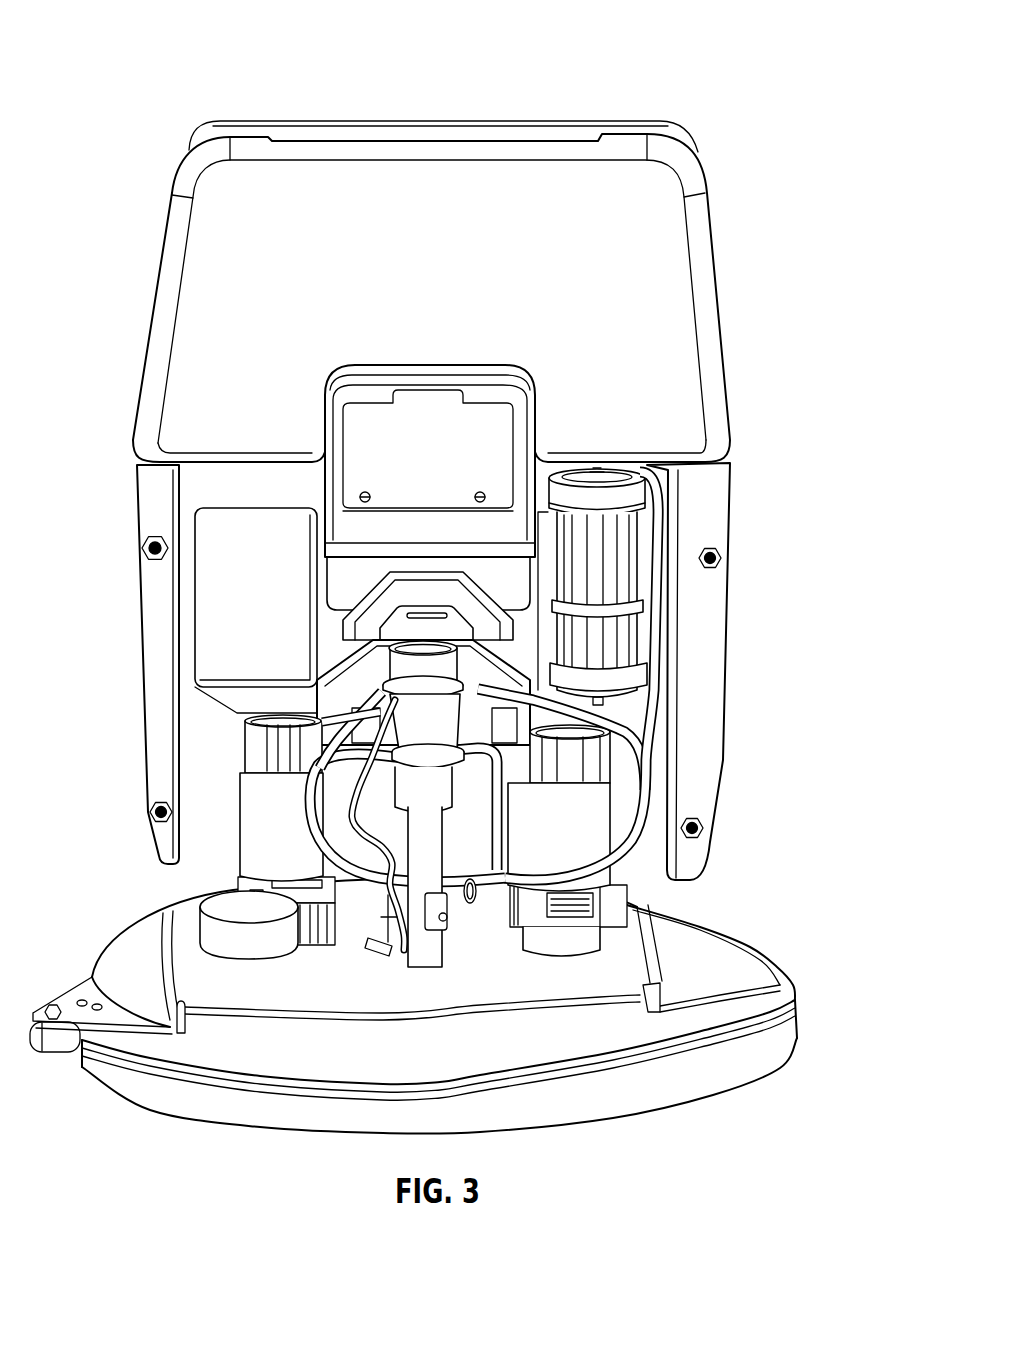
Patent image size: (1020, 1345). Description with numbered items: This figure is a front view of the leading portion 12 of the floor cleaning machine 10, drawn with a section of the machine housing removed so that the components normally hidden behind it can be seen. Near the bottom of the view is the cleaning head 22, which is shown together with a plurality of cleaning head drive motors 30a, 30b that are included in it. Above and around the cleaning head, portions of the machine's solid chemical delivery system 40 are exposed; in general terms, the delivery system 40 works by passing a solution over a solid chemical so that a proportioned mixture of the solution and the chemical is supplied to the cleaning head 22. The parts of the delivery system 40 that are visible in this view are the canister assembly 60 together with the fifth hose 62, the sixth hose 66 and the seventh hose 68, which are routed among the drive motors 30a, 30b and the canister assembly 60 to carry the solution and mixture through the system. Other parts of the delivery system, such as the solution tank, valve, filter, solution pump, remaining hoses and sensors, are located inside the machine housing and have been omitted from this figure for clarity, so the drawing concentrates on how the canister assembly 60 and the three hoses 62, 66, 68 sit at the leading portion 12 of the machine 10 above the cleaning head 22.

The floor cleaning machine 10 is at (449, 575).
The leading portion 12 is at (680, 403).
The cleaning head 22 is at (763, 997).
The cleaning head drive motor 30a is at (590, 810).
The cleaning head drive motor 30b is at (260, 798).
The solid chemical delivery system 40 is at (737, 611).
The canister assembly 60 is at (613, 557).
The fifth hose 62 is at (653, 590).
The sixth hose 66 is at (615, 825).
The seventh hose 68 is at (623, 733).